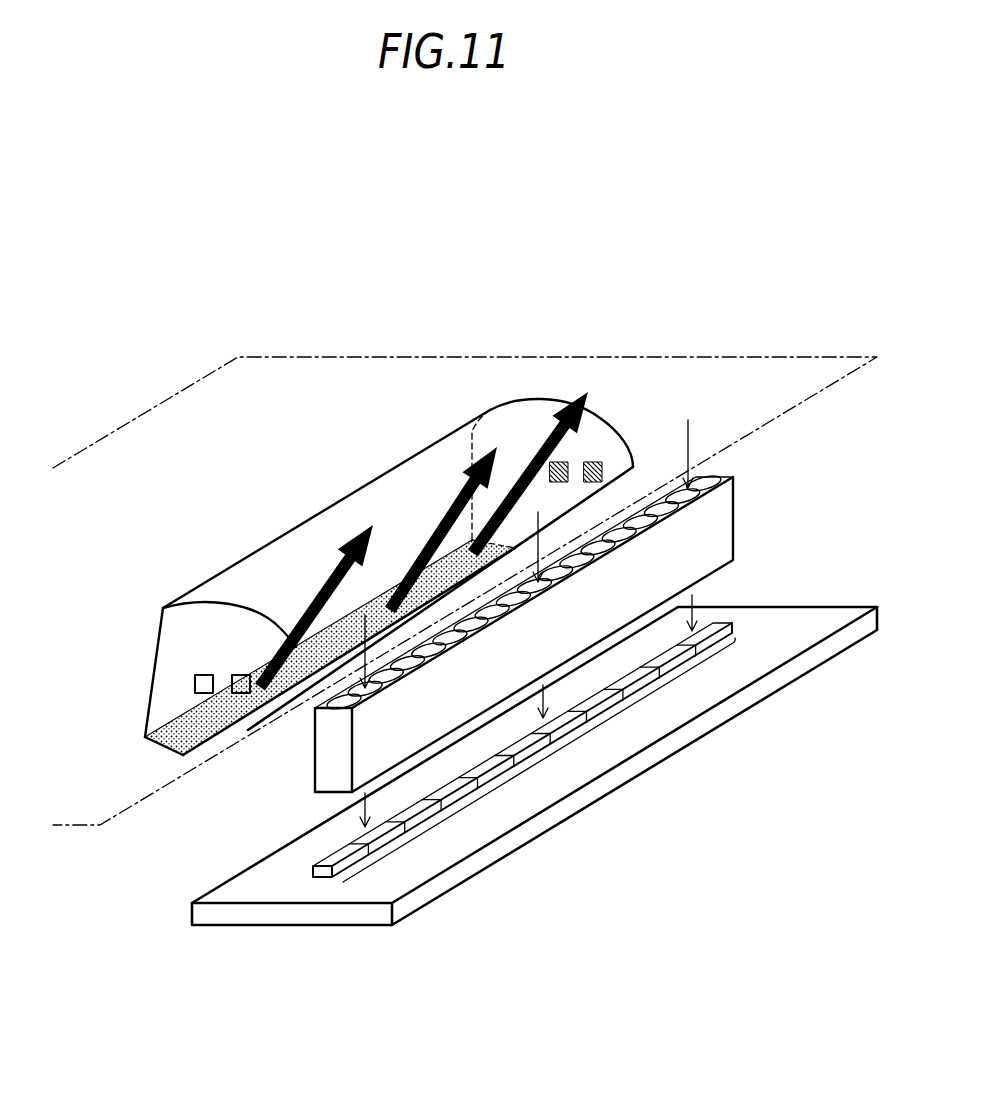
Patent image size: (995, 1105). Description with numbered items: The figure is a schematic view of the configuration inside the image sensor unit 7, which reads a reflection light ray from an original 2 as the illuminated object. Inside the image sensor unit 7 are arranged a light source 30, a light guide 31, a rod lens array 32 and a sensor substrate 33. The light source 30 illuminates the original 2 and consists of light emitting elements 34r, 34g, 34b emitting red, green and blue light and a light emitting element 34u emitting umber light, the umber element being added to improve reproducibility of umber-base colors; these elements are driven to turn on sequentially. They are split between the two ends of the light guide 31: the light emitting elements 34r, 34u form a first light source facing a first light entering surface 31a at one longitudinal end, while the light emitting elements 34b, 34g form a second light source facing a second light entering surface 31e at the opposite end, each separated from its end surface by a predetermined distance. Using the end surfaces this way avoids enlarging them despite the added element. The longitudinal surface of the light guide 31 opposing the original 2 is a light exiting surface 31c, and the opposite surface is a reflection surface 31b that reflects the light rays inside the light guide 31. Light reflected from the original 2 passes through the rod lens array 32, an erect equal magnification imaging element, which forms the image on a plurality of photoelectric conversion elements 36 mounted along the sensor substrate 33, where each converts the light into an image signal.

The original 2 is at (317, 355).
The image sensor unit 7 is at (501, 664).
The light source 30 is at (383, 542).
The light guide 31 is at (352, 579).
The first light entering surface 31a is at (170, 643).
The reflection surface 31b is at (155, 750).
The light exiting surface 31c is at (230, 583).
The second light entering surface 31e is at (527, 413).
The rod lens array 32 is at (727, 522).
The sensor substrate 33 is at (230, 882).
The light emitting element 34r is at (241, 677).
The light emitting element 34u is at (203, 687).
The light emitting element 34b is at (559, 462).
The light emitting element 34g is at (593, 462).
The photoelectric conversion elements 36 is at (548, 750).